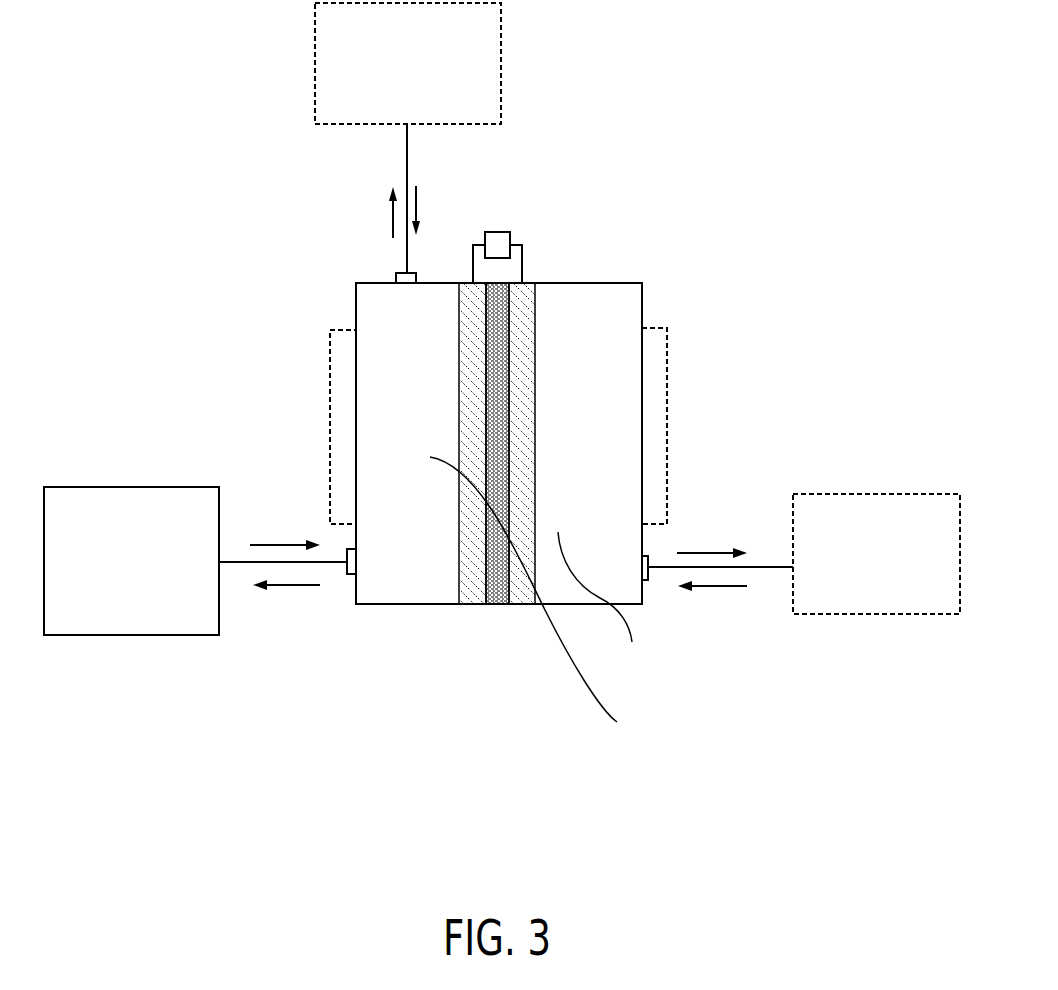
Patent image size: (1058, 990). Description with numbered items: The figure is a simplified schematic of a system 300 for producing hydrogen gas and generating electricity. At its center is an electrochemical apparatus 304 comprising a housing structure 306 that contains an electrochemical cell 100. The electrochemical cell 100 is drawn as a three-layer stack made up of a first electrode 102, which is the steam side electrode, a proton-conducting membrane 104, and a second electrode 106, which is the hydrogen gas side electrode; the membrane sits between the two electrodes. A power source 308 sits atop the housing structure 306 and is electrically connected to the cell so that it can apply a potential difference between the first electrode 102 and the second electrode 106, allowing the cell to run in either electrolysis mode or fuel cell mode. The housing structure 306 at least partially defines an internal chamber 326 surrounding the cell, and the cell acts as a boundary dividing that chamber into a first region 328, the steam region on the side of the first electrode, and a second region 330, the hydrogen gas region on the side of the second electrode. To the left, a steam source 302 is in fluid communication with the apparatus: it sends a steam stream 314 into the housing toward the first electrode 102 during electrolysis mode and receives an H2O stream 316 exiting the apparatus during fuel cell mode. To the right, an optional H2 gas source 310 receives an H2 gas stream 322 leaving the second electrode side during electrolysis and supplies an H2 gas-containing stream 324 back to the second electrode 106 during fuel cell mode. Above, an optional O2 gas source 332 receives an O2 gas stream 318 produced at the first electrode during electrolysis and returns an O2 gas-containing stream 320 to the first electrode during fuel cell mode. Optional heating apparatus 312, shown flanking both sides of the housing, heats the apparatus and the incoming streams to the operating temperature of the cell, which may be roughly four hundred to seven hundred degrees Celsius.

The electrochemical cell 100 is at (435, 512).
The first electrode 102 is at (476, 594).
The proton-conducting membrane 104 is at (502, 594).
The second electrode 106 is at (528, 594).
The system 300 is at (180, 222).
The steam source 302 is at (159, 578).
The electrochemical apparatus 304 is at (654, 241).
The housing structure 306 is at (642, 307).
The power source 308 is at (500, 240).
The H2 gas source 310 is at (899, 568).
The heating apparatus 312 is at (345, 395).
The steam stream 314 is at (277, 542).
The H2O stream 316 is at (293, 587).
The O2 gas stream 318 is at (392, 225).
The O2 gas-containing stream 320 is at (418, 200).
The H2 gas stream 322 is at (707, 550).
The H2 gas-containing stream 324 is at (717, 587).
The internal chamber 326 is at (571, 604).
The first region 328 is at (540, 598).
The second region 330 is at (604, 608).
The O2 gas source 332 is at (423, 77).